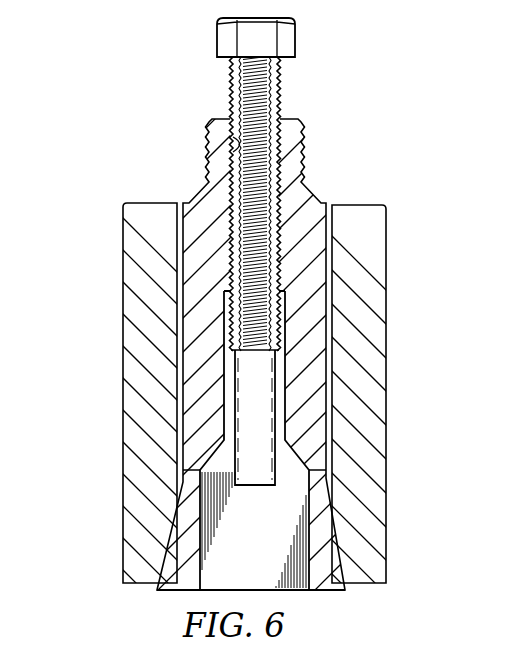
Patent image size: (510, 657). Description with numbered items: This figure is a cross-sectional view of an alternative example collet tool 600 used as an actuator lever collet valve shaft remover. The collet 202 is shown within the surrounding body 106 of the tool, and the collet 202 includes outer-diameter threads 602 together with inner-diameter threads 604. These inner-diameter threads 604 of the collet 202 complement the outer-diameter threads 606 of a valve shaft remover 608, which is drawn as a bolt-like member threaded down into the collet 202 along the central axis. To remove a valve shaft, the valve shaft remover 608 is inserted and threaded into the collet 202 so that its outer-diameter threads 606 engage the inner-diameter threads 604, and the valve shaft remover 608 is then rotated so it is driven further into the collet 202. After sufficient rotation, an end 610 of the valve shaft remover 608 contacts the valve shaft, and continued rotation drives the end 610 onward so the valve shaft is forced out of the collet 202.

The collet tool 600 is at (86, 250).
The housing / outer sleeve 106 is at (122, 398).
The outer-diameter threads 606 is at (231, 195).
The outer-diameter threads 602 is at (303, 155).
The inner-diameter threads 604 is at (234, 161).
The valve shaft remover 608 is at (296, 46).
The end 610 is at (253, 488).
The collet 202 is at (321, 592).